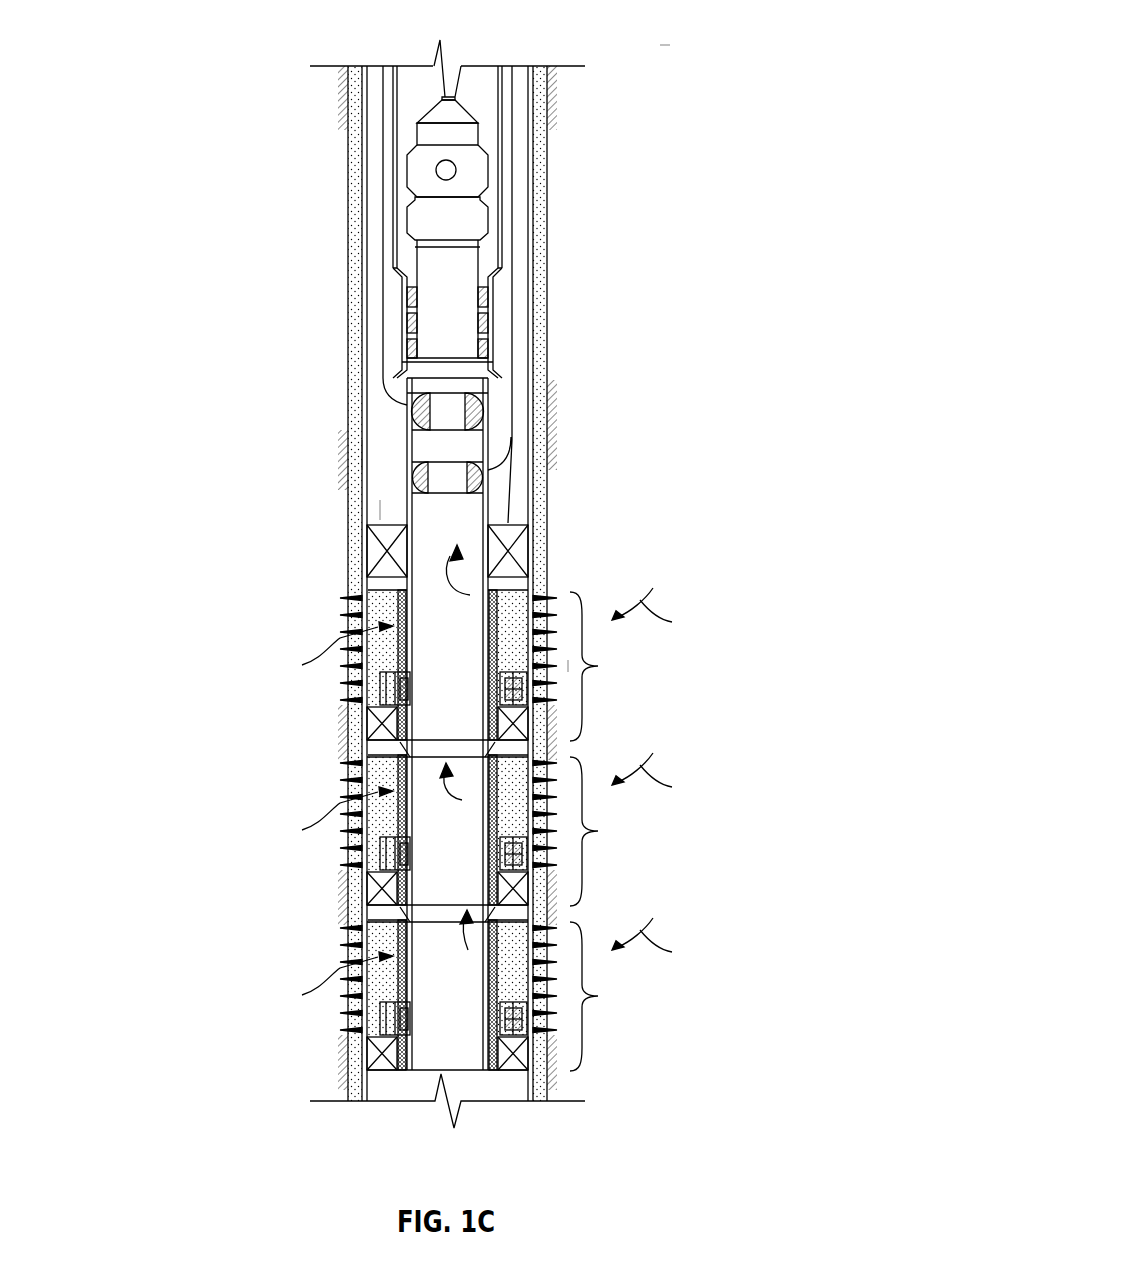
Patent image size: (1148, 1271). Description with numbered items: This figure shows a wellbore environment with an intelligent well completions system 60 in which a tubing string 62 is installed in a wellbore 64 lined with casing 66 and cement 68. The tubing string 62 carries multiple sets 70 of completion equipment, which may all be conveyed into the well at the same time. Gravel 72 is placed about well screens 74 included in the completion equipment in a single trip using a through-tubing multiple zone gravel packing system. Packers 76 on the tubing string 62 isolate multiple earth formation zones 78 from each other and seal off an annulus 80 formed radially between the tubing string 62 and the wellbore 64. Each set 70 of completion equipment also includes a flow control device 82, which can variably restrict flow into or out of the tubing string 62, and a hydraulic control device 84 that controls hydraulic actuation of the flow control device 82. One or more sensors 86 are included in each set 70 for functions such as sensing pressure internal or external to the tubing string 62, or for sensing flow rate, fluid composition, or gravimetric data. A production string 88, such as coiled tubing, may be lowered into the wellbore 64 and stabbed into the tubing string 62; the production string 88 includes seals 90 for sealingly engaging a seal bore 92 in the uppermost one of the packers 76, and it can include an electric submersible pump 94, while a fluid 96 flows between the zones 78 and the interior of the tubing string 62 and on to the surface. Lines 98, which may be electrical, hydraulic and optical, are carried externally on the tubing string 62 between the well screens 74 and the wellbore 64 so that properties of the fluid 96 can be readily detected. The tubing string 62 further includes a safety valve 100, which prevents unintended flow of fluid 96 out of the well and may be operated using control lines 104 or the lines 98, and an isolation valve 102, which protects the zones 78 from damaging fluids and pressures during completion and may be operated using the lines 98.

The intelligent well completions system 60 is at (673, 38).
The tubing string 62 is at (385, 530).
The wellbore 64 is at (345, 435).
The casing 66 is at (530, 175).
The cement 68 is at (343, 232).
The sets of completion equipment 70 is at (498, 831).
The gravel 72 is at (350, 617).
The well screens 74 is at (348, 673).
The packers 76 is at (372, 550).
The earth formation zones 78 is at (647, 710).
The annulus 80 is at (522, 578).
The flow control device 82 is at (413, 688).
The hydraulic control device 84 is at (485, 703).
The sensors 86 is at (347, 703).
The production string 88 is at (432, 77).
The seals 90 is at (398, 272).
The seal bore 92 is at (402, 350).
The electric submersible pump 94 is at (405, 165).
The fluid 96 is at (486, 777).
The lines 98 is at (512, 135).
The safety valve 100 is at (486, 410).
The isolation valve 102 is at (393, 509).
The control lines 104 is at (402, 300).